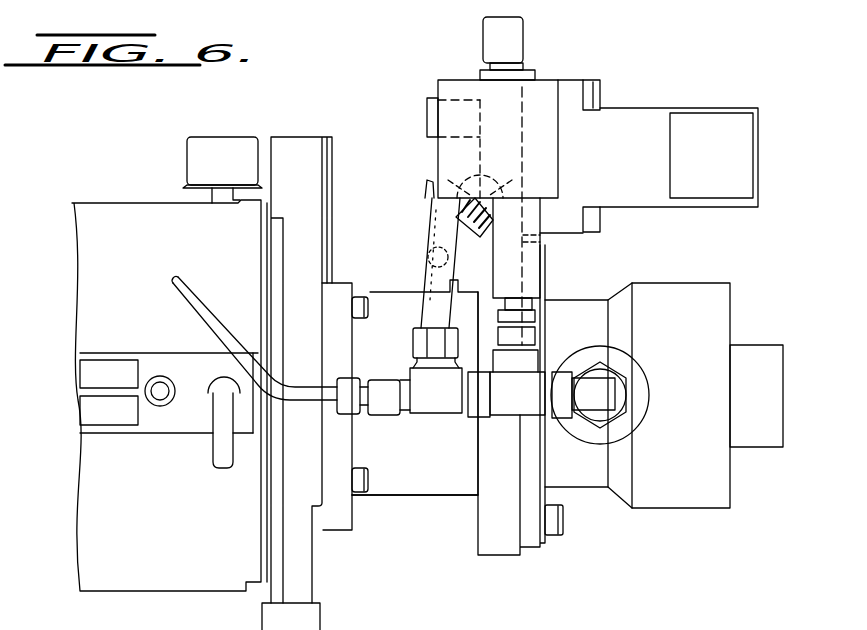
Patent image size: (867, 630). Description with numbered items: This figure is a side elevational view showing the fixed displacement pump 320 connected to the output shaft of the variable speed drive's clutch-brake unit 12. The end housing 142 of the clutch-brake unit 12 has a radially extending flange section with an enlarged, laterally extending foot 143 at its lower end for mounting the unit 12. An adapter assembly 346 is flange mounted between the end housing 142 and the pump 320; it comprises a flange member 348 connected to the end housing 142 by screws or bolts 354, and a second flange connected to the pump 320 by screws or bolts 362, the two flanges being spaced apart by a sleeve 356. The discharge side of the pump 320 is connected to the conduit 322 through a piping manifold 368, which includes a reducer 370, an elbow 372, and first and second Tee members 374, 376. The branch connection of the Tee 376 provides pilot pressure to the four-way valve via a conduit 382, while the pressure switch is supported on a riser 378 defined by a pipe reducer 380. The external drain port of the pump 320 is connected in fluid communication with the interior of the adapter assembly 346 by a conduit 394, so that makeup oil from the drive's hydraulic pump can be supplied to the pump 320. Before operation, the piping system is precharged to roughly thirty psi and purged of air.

The clutch-brake unit 12 is at (166, 562).
The end housing member 142 is at (297, 138).
The foot 143 is at (303, 622).
The fixed displacement pump 320 is at (540, 110).
The conduit 322 is at (193, 298).
The adapter assembly 346 is at (437, 498).
The flange member 348 is at (337, 238).
The screws or bolts 354 is at (366, 473).
The sleeve 356 is at (386, 293).
The screws or bolts 362 is at (567, 527).
The piping manifold 368 is at (482, 418).
The reducer 370 is at (368, 396).
The elbow 372 is at (605, 398).
The first Tee member 374 is at (533, 400).
The second Tee member 376 is at (452, 400).
The riser 378 is at (436, 348).
The pipe reducer 380 is at (541, 330).
The conduit 382 is at (427, 203).
The conduit 394 is at (450, 236).